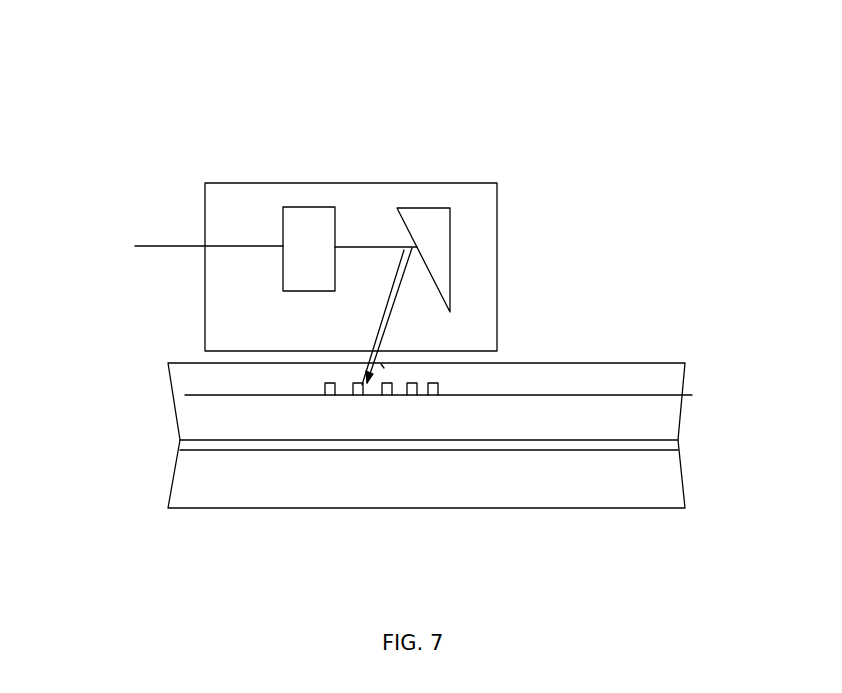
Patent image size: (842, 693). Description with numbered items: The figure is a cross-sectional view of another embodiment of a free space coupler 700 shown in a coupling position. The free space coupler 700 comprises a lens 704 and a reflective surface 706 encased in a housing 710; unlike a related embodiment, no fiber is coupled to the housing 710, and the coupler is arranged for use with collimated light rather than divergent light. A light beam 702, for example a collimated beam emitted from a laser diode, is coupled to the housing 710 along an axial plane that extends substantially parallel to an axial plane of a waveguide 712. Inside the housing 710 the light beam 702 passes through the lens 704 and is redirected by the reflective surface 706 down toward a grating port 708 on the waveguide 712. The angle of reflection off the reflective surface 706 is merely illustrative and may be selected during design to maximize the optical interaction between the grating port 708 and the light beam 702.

The free space coupler 700 is at (215, 168).
The light beam 702 is at (167, 247).
The lens 704 is at (305, 207).
The reflective surface 706 is at (435, 208).
The grating port 708 is at (398, 258).
The housing 710 is at (497, 275).
The waveguide 712 is at (610, 362).